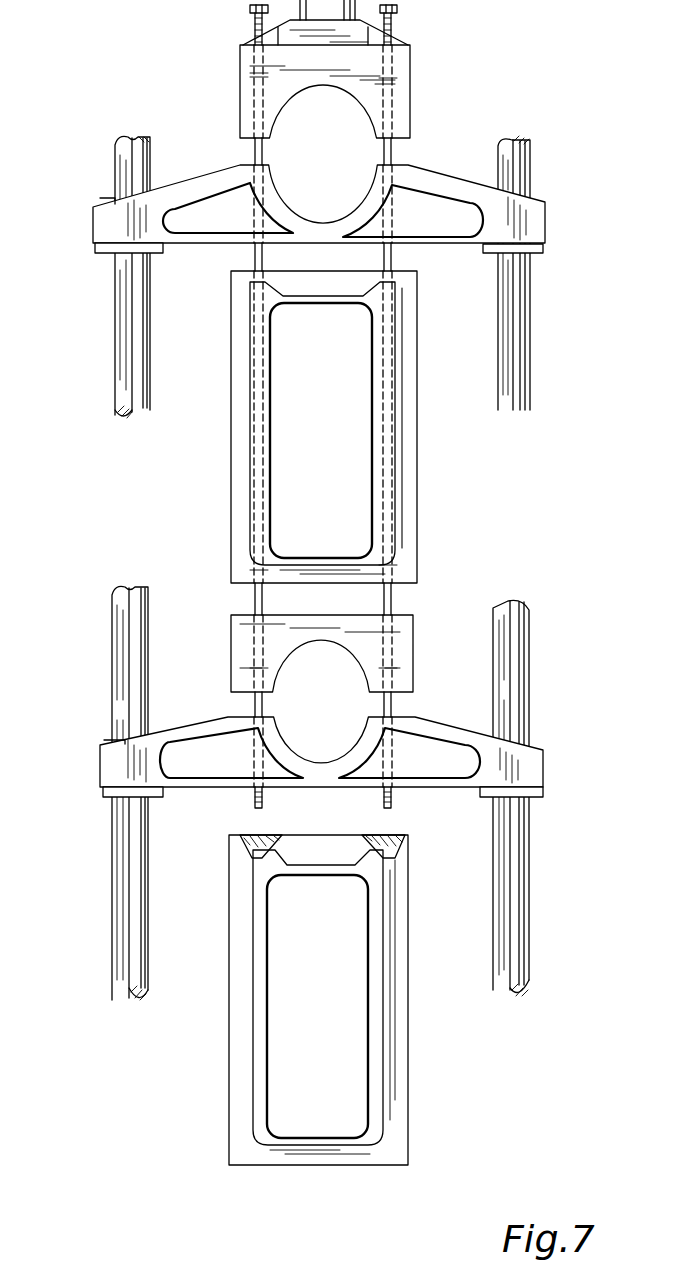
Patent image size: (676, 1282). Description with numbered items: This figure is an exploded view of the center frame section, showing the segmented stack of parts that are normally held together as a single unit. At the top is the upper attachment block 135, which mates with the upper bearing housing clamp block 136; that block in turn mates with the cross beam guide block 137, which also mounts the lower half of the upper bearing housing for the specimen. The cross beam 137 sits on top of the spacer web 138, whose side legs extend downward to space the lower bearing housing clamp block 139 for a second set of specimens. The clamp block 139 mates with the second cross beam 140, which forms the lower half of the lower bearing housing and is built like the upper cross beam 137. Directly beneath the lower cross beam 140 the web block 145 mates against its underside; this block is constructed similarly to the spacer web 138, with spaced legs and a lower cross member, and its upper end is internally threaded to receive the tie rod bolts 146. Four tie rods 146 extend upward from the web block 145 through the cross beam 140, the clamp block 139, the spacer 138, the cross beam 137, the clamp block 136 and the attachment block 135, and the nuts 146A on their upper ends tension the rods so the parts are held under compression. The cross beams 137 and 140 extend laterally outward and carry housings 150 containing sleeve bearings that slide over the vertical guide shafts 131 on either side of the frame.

The vertical guide shaft 131 is at (118, 340).
The upper attachment block 135 is at (397, 34).
The upper bearing housing clamp block 136 is at (407, 74).
The cross beam guide block 137 is at (476, 226).
The spacer web 138 is at (416, 495).
The lower bearing housing clamp block 139 is at (240, 640).
The second cross beam 140 is at (445, 728).
The web block 145 is at (406, 1030).
The tie rod bolt 146 is at (252, 255).
The nut 146A is at (250, 9).
The housing 150 is at (520, 205).